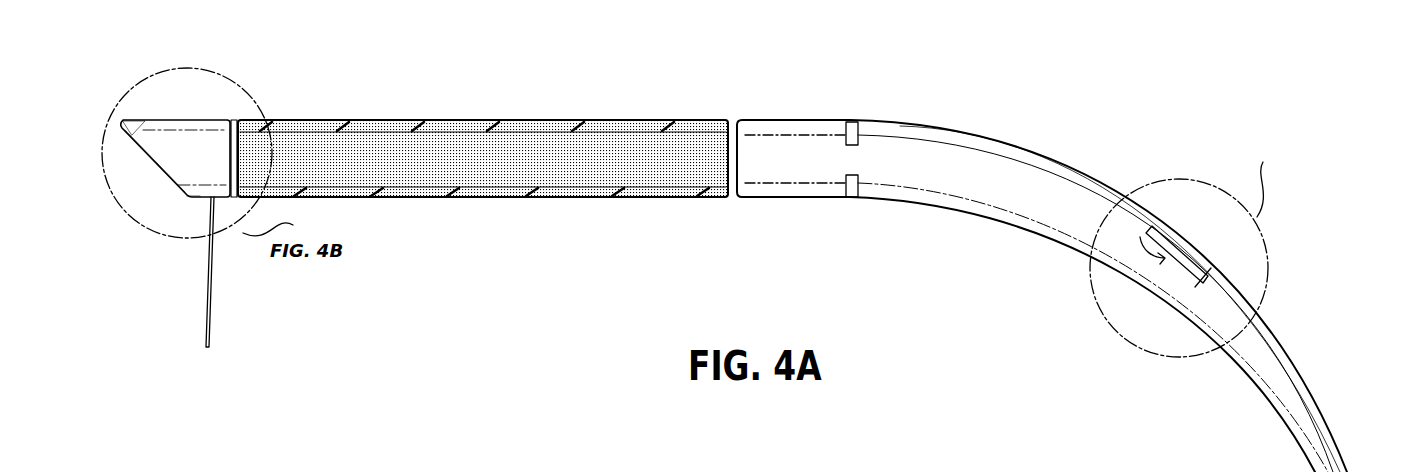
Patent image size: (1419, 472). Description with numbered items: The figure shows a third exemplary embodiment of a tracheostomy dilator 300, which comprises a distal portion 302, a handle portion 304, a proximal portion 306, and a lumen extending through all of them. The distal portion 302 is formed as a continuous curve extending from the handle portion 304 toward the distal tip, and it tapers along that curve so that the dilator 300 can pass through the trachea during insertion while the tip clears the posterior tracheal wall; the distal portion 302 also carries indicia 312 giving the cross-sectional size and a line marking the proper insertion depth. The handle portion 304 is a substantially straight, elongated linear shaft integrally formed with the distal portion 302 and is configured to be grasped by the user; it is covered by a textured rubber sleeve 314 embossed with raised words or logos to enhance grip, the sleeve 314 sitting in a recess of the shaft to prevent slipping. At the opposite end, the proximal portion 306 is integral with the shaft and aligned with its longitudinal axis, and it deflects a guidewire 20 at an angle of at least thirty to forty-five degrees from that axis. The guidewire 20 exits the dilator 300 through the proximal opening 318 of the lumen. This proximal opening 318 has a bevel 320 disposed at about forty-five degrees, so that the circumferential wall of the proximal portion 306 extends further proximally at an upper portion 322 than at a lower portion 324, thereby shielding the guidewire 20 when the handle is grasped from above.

The guidewire 20 is at (214, 326).
The tracheostomy dilator 300 is at (1110, 163).
The distal portion 302 is at (1283, 343).
The handle portion 304 is at (460, 130).
The proximal portion 306 is at (197, 140).
The indicia 312 is at (1197, 257).
The textured rubber sleeve 314 is at (613, 127).
The proximal opening 318 is at (146, 160).
The bevel 320 is at (172, 178).
The upper portion 322 is at (140, 121).
The lower portion 324 is at (187, 202).